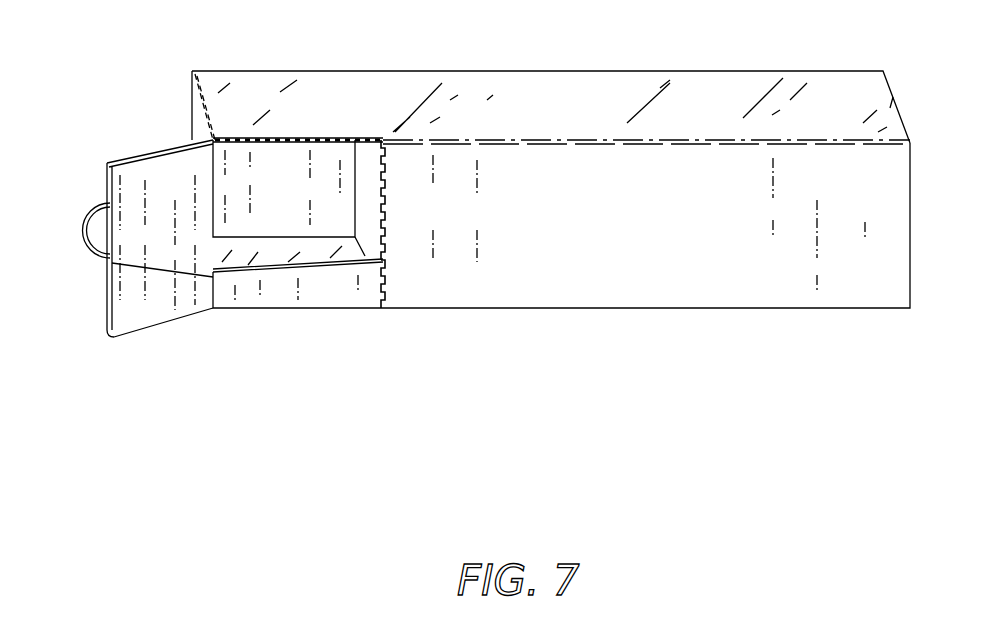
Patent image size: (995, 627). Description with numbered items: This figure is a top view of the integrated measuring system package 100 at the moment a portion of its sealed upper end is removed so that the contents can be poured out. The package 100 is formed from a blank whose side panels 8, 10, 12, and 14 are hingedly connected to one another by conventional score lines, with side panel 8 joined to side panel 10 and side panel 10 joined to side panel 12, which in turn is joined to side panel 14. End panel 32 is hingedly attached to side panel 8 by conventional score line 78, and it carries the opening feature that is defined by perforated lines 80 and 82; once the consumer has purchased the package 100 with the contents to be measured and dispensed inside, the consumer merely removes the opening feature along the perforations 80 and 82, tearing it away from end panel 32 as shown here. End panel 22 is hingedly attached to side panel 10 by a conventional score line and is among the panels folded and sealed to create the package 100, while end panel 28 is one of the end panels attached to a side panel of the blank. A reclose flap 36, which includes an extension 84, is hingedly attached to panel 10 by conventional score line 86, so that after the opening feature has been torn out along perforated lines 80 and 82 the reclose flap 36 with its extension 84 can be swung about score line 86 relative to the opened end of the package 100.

The integrated measuring system package 100 is at (464, 226).
The side panel 10 is at (200, 127).
The side panel 8 is at (537, 114).
The score line 78 is at (678, 142).
The end panel 32 is at (609, 221).
The side panel 14 is at (417, 241).
The perforated line 80 is at (388, 272).
The perforated line 82 is at (295, 140).
The end panel 22 is at (298, 196).
The side panel 12 is at (285, 250).
The end panel 28 is at (285, 287).
The reclose flap 36 is at (160, 255).
The score line 86 is at (210, 275).
The extension 84 is at (85, 225).